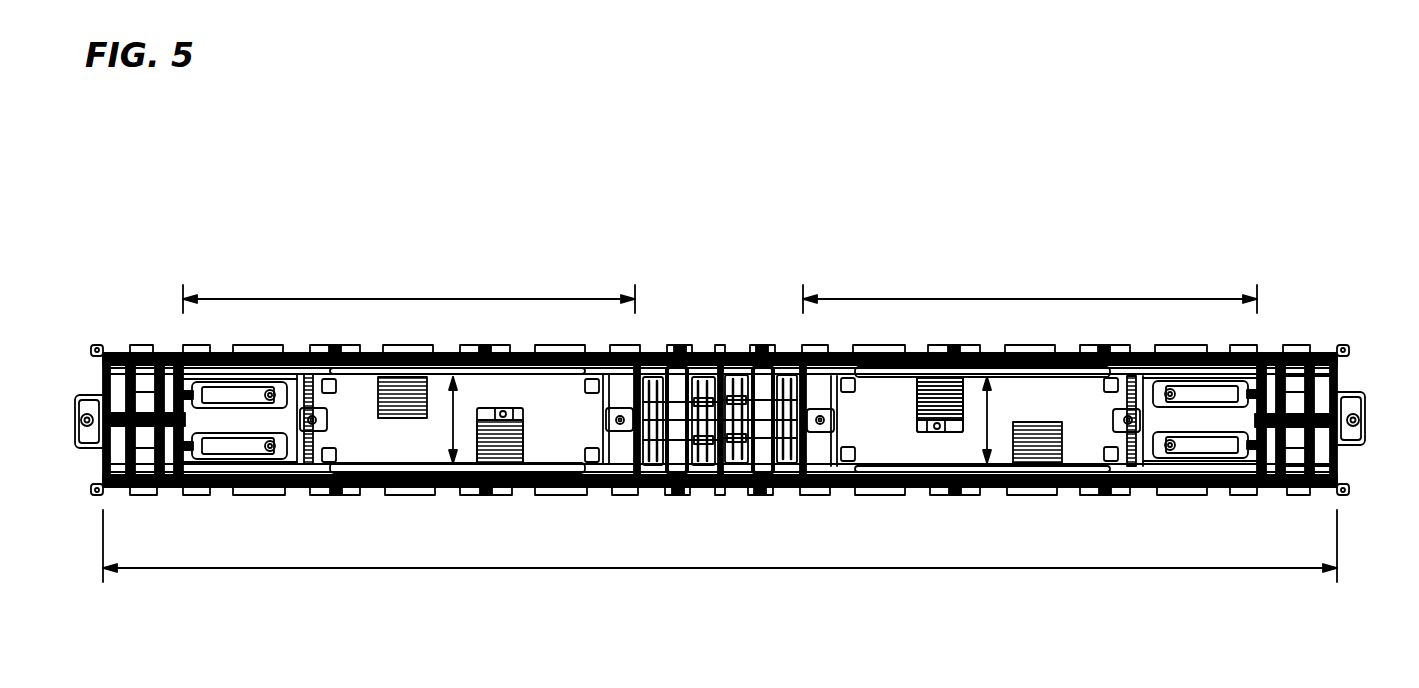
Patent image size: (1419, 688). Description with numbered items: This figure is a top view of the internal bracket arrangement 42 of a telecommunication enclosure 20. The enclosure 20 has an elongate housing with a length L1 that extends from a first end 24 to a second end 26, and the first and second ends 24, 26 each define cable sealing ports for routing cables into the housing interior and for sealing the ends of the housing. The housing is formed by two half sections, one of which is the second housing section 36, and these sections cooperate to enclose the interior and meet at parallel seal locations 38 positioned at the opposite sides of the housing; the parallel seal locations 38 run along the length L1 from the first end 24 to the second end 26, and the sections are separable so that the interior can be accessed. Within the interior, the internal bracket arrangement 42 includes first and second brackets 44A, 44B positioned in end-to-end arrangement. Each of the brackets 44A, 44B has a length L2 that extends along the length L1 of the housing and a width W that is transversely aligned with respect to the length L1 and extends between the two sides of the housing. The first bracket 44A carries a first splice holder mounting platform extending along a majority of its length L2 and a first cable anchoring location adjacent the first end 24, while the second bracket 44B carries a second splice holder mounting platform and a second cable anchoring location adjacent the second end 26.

The telecommunication enclosure 20 is at (957, 208).
The first end 24 is at (103, 457).
The second end 26 is at (1337, 462).
The second housing section 36 is at (562, 507).
The parallel seal locations 38 is at (652, 350).
The internal bracket arrangement 42 is at (877, 388).
The first bracket 44A is at (382, 445).
The second bracket 44B is at (945, 452).
The width W is at (452, 425).
The length L1 is at (720, 560).
The length L2 is at (720, 289).